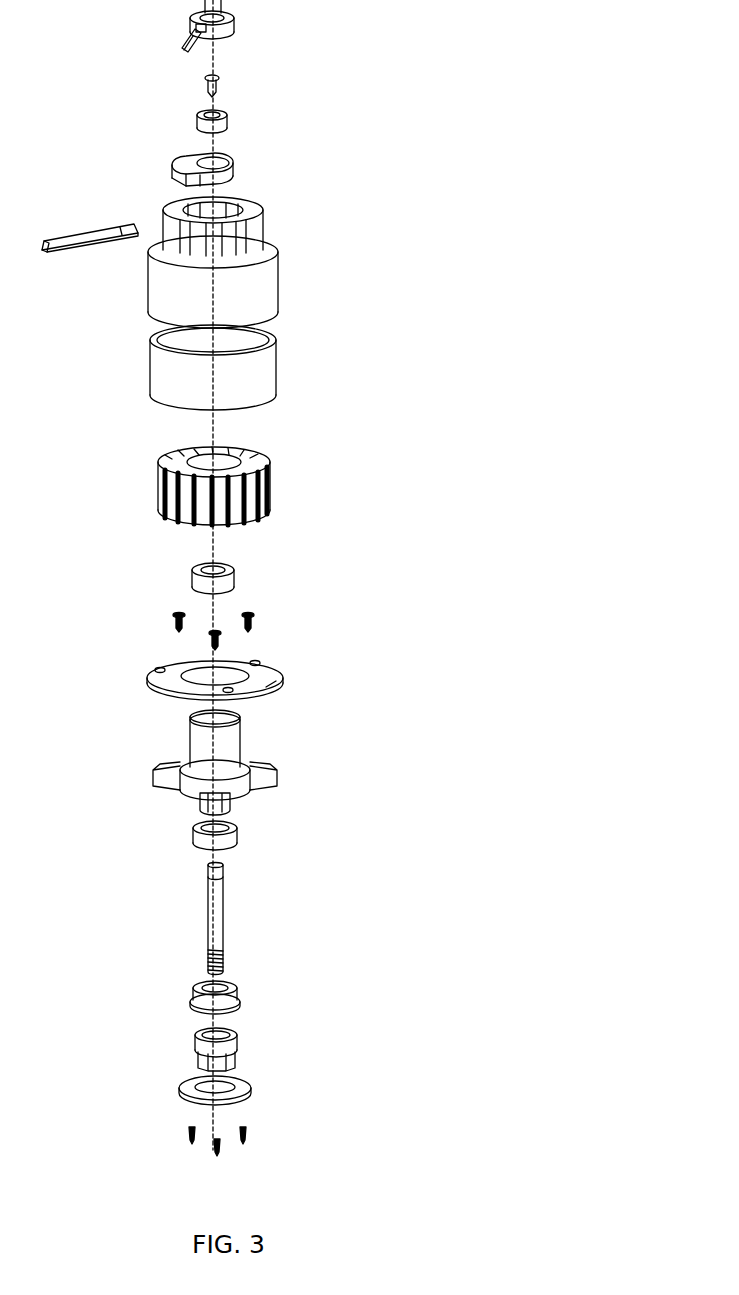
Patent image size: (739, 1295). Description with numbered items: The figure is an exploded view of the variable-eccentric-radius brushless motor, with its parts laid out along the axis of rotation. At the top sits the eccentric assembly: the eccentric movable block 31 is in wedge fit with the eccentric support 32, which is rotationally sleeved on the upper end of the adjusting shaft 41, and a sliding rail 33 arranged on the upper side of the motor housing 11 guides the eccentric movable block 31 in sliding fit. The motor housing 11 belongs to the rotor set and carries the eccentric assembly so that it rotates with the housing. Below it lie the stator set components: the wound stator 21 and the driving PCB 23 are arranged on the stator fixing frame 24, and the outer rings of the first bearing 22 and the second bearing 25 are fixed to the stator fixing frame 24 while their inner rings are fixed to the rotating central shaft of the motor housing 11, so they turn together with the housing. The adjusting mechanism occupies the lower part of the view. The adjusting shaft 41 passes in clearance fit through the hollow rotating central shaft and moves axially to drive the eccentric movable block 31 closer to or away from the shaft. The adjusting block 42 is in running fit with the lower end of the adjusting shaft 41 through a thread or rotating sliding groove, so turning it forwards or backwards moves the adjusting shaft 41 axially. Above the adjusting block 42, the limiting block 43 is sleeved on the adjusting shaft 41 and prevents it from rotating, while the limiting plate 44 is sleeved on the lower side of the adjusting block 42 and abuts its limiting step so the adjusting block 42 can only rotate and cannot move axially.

The motor housing 11 is at (268, 283).
The wound stator 21 is at (270, 506).
The first bearing 22 is at (234, 586).
The driving PCB 23 is at (282, 687).
The stator fixing frame 24 is at (273, 784).
The second bearing 25 is at (238, 840).
The eccentric movable block 31 is at (234, 20).
The eccentric support 32 is at (233, 172).
The sliding rail 33 is at (88, 255).
The adjusting shaft 41 is at (222, 936).
The adjusting block 42 is at (238, 1052).
The limiting block 43 is at (240, 998).
The limiting plate 44 is at (252, 1095).